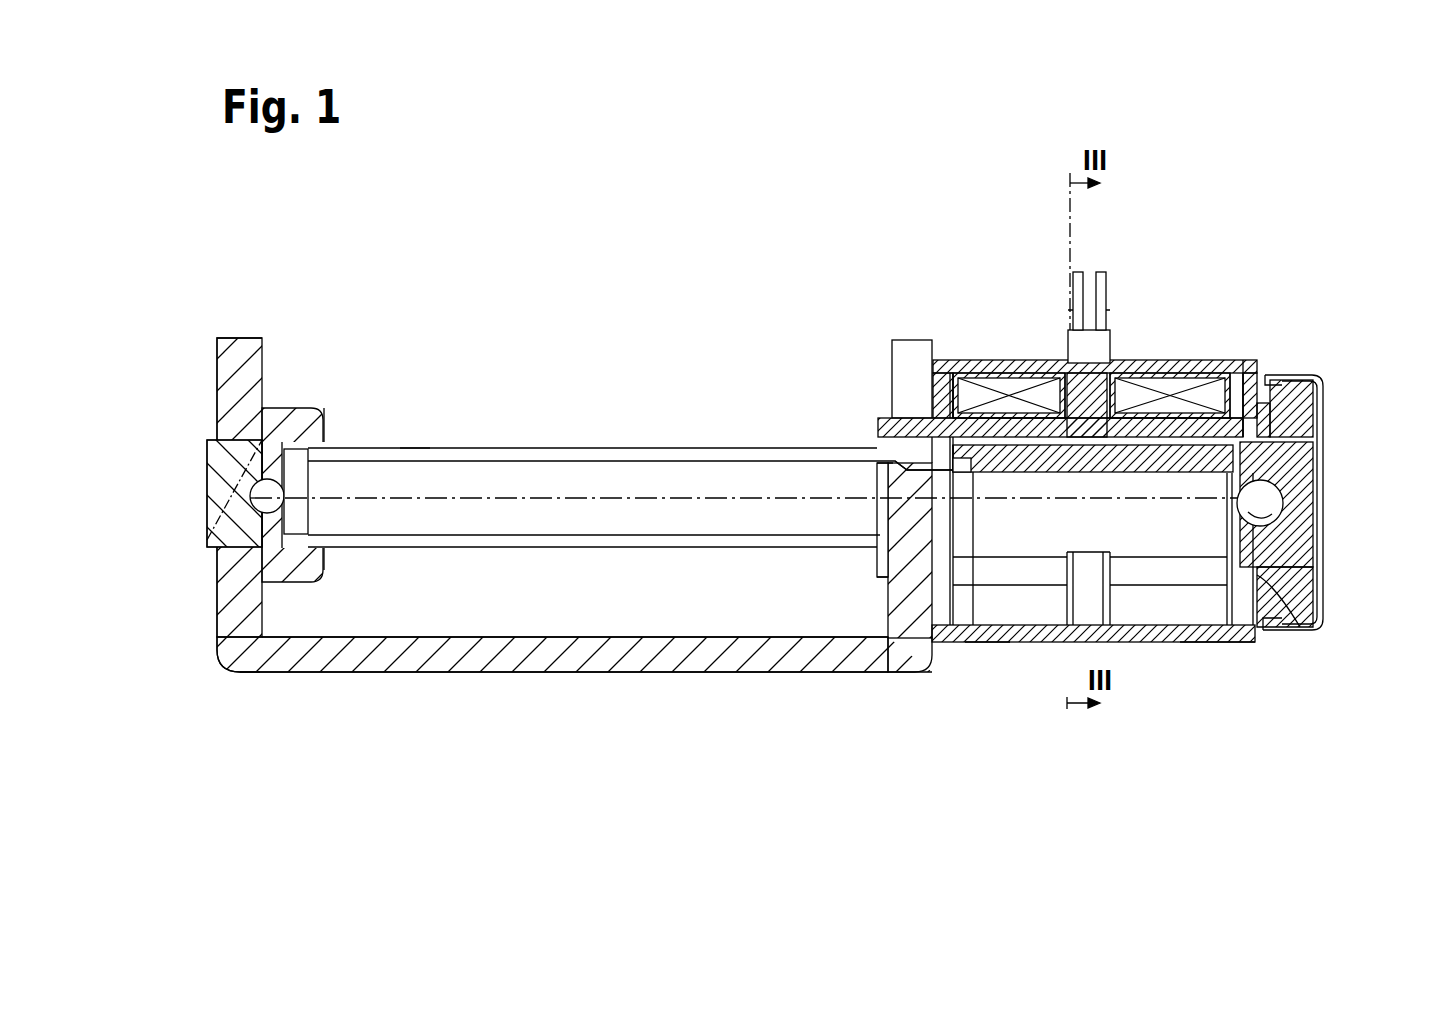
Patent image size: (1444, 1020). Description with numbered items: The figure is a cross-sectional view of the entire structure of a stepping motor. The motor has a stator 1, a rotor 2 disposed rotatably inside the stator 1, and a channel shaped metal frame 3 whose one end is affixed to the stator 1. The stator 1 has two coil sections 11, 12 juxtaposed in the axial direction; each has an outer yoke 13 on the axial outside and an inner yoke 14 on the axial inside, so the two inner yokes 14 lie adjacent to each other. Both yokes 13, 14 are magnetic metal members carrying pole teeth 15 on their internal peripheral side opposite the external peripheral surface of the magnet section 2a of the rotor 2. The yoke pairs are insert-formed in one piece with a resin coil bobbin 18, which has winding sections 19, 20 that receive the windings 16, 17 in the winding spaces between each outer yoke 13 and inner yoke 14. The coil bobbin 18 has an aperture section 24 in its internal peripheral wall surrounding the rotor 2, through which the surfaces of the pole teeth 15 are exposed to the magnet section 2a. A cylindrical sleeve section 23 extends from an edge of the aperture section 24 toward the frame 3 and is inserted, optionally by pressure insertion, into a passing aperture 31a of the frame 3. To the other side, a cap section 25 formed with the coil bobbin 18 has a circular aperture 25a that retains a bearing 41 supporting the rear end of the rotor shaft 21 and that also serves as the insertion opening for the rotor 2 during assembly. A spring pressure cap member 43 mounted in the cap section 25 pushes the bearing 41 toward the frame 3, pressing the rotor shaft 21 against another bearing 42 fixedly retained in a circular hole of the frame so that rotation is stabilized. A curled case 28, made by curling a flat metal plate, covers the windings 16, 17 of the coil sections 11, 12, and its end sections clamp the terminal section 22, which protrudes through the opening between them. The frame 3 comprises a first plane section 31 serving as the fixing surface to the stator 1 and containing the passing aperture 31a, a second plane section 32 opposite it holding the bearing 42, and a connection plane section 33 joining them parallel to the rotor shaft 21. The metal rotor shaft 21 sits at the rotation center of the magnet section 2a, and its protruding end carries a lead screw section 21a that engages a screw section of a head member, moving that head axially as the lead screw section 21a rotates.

The stator 1 is at (1195, 740).
The rotor 2 is at (912, 418).
The magnet section 2a is at (1002, 642).
The frame 3 is at (500, 676).
The coil section 11 is at (1030, 603).
The coil section 12 is at (1172, 603).
The outer yoke 13 is at (952, 385).
The inner yoke 14 is at (1050, 395).
The pole teeth 15 is at (993, 455).
The winding 16 is at (1005, 385).
The winding 17 is at (1167, 397).
The coil bobbin 18 is at (1313, 408).
The winding section 19 is at (965, 410).
The winding section 20 is at (1232, 368).
The rotor shaft 21 is at (490, 478).
The lead screw section 21a is at (415, 446).
The terminal section 22 is at (1083, 343).
The cylindrical sleeve section 23 is at (942, 459).
The aperture section 24 is at (955, 490).
The cap section 25 is at (1297, 375).
The circular aperture 25a is at (1312, 628).
The curled case 28 is at (1207, 642).
The first plane section 31 is at (898, 602).
The passing aperture 31a is at (960, 558).
The second plane section 32 is at (238, 355).
The connection plane section 33 is at (634, 648).
The bearing 41 is at (1283, 500).
The bearing 42 is at (208, 547).
The spring pressure cap member 43 is at (1310, 557).